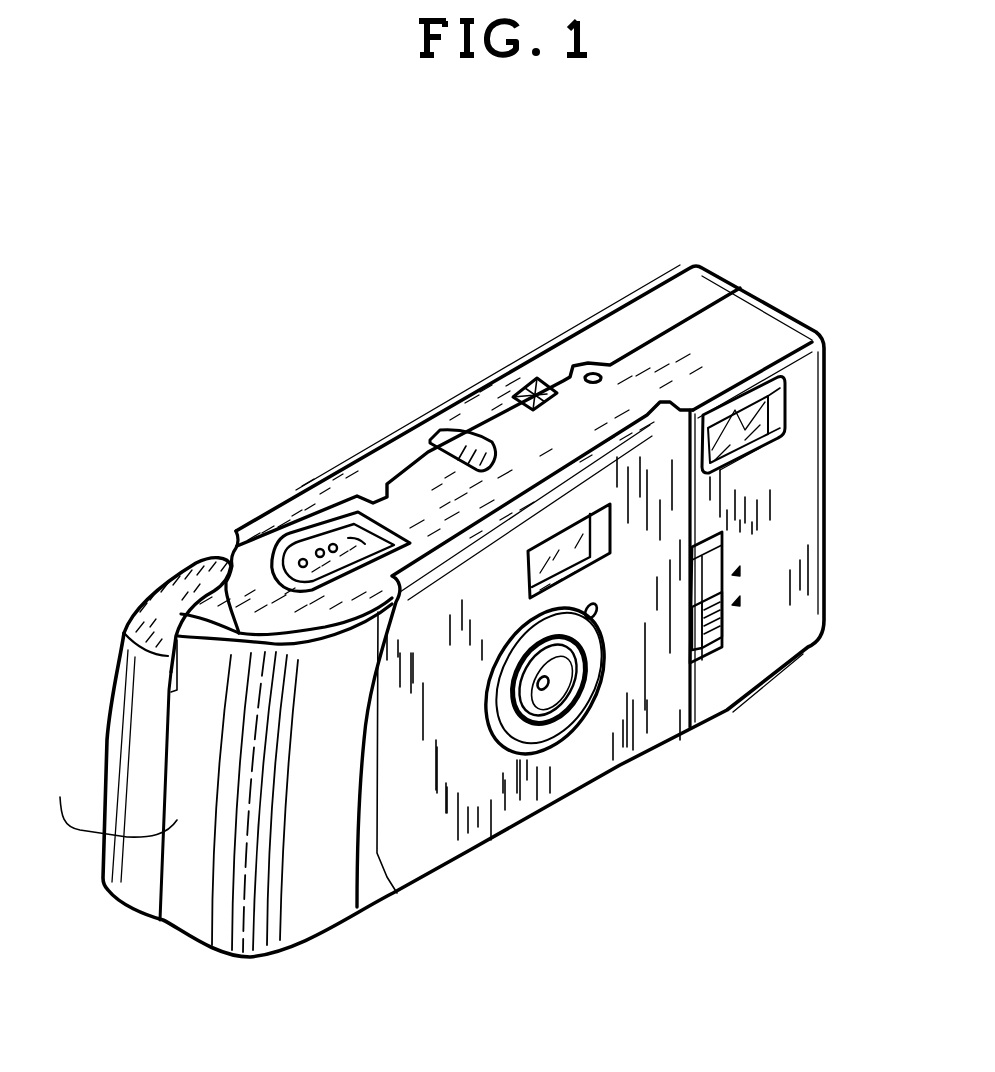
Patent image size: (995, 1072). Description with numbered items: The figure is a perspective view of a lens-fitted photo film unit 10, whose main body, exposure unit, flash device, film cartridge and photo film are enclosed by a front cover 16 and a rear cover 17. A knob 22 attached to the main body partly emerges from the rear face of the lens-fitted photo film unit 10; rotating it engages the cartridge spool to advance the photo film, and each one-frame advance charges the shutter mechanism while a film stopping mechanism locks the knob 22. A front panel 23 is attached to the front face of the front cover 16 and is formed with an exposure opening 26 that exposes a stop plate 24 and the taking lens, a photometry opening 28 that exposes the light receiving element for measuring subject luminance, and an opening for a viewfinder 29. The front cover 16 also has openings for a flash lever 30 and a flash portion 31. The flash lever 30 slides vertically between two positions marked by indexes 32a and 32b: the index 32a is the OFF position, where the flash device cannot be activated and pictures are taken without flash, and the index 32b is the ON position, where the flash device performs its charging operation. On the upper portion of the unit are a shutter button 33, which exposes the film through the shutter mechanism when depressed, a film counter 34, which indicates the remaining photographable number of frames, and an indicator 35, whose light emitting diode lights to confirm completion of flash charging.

The lens-fitted photo film unit 10 is at (733, 227).
The front cover 16 is at (762, 322).
The rear cover 17 is at (657, 304).
The knob 22 is at (198, 577).
The front panel 23 is at (457, 840).
The stop plate 24 is at (540, 690).
The exposure opening 26 is at (567, 703).
The photometry opening 28 is at (596, 618).
The viewfinder 29 is at (527, 567).
The flash lever 30 is at (702, 638).
The flash portion 31 is at (772, 407).
The index 32a is at (787, 576).
The index 32b is at (778, 550).
The shutter button 33 is at (319, 551).
The film counter 34 is at (457, 444).
The indicator 35 is at (537, 380).